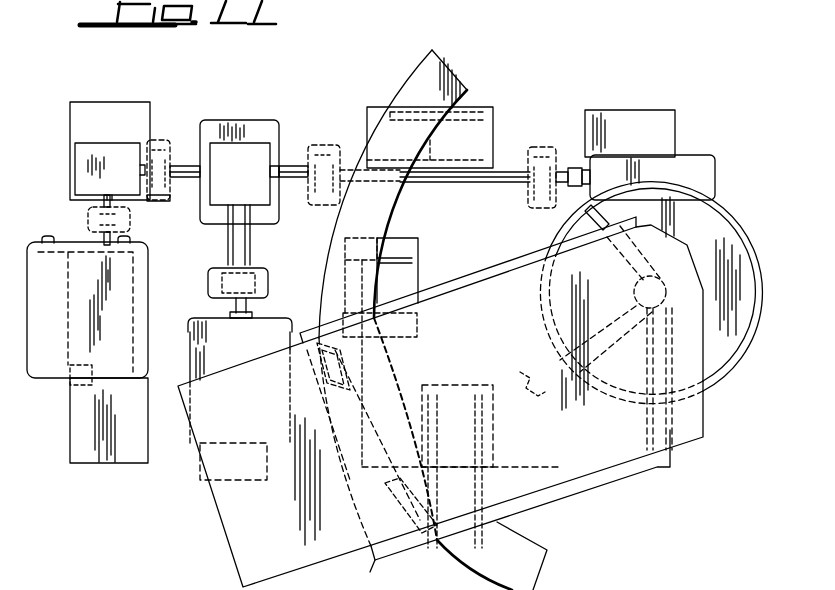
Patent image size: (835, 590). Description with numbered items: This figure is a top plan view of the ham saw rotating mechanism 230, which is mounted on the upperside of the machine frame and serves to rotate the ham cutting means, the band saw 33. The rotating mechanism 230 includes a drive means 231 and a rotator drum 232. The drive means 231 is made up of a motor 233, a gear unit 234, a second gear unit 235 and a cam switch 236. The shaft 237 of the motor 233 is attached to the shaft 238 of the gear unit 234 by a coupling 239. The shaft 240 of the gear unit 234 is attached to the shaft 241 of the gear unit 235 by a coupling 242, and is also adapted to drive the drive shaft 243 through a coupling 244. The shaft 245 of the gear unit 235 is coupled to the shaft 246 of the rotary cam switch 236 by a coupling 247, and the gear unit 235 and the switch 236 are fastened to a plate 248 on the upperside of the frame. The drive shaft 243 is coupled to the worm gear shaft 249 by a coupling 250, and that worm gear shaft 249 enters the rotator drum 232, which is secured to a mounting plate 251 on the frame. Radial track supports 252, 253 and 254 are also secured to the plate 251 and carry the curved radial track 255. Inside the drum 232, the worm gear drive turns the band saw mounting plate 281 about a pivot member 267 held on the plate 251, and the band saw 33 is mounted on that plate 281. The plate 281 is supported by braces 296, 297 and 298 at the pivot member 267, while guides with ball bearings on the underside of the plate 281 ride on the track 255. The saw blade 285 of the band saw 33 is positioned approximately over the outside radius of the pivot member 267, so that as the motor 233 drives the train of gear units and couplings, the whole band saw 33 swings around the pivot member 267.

The band saw 33 is at (681, 429).
The ham saw rotating mechanism 230 is at (433, 317).
The drive means 231 is at (218, 352).
The rotator drum 232 is at (735, 373).
The motor 233 is at (190, 340).
The gear unit 234 is at (233, 155).
The gear unit 235 is at (93, 157).
The cam switch 236 is at (45, 360).
The shaft 237 is at (232, 302).
The shaft 238 is at (258, 270).
The coupling 239 is at (262, 290).
The shaft 240 is at (180, 166).
The shaft 241 is at (163, 138).
The coupling 242 is at (160, 201).
The drive shaft 243 is at (420, 175).
The coupling 244 is at (320, 195).
The shaft 245 is at (107, 195).
The shaft 246 is at (107, 240).
The coupling 247 is at (90, 213).
The plate 248 is at (88, 425).
The worm gear shaft 249 is at (563, 190).
The coupling 250 is at (540, 150).
The mounting plate 251 is at (657, 144).
The radial track support 252 is at (468, 458).
The radial track support 253 is at (418, 270).
The radial track support 254 is at (488, 115).
The radial track 255 is at (448, 88).
The pivot member 267 is at (613, 299).
The band saw mounting plate 281 is at (618, 478).
The saw blade 285 is at (629, 379).
The brace 296 is at (638, 379).
The brace 297 is at (525, 373).
The brace 298 is at (599, 217).